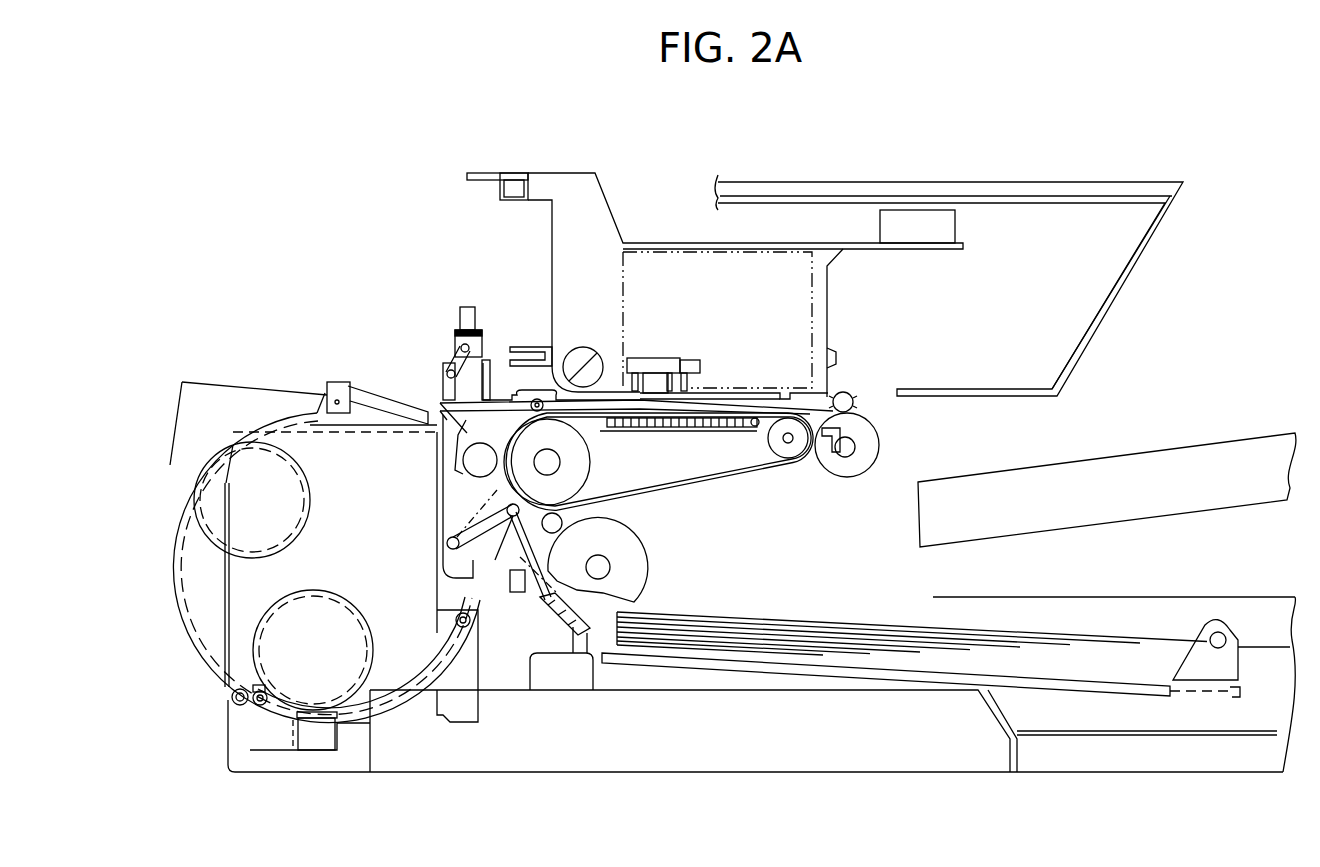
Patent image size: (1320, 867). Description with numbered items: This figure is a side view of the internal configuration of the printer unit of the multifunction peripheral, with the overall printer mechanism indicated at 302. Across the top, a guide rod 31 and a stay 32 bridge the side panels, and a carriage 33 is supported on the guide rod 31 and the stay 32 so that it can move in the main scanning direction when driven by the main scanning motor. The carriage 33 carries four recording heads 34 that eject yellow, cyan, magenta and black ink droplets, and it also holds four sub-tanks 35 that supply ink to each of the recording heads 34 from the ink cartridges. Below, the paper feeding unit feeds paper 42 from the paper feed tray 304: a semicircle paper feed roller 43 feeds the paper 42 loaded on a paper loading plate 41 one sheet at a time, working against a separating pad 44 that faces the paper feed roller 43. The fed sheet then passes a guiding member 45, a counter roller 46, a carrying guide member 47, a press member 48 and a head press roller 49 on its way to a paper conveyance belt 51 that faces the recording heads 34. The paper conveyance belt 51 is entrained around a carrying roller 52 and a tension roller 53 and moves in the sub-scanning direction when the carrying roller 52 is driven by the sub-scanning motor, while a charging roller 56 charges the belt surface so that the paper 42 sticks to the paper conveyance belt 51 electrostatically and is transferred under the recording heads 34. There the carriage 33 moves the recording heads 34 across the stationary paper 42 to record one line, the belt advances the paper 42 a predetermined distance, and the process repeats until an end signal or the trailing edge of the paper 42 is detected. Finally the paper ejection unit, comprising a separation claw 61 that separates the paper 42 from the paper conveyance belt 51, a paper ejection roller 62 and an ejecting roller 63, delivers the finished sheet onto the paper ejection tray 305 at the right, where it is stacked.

The image forming unit housing 302 is at (280, 200).
The paper feed tray 304 is at (984, 758).
The paper ejection tray 305 is at (1244, 450).
The guide rod 31 is at (583, 355).
The stay 32 is at (508, 178).
The carriage 33 is at (600, 210).
The recording heads 34 is at (737, 393).
The sub-tanks 35 is at (686, 262).
The paper loading plate 41 is at (697, 668).
The paper 42 is at (790, 650).
The paper feed roller 43 is at (642, 570).
The separating pad 44 is at (558, 615).
The guiding member 45 is at (518, 596).
The counter roller 46 is at (465, 458).
The carrying guide member 47 is at (478, 430).
The press member 48 is at (460, 353).
The head press roller 49 is at (535, 398).
The paper conveyance belt 51 is at (702, 478).
The carrying roller 52 is at (592, 458).
The tension roller 53 is at (790, 460).
The charging roller 56 is at (563, 522).
The separation claw 61 is at (832, 462).
The paper ejection roller 62 is at (875, 445).
The ejecting roller 63 is at (848, 395).